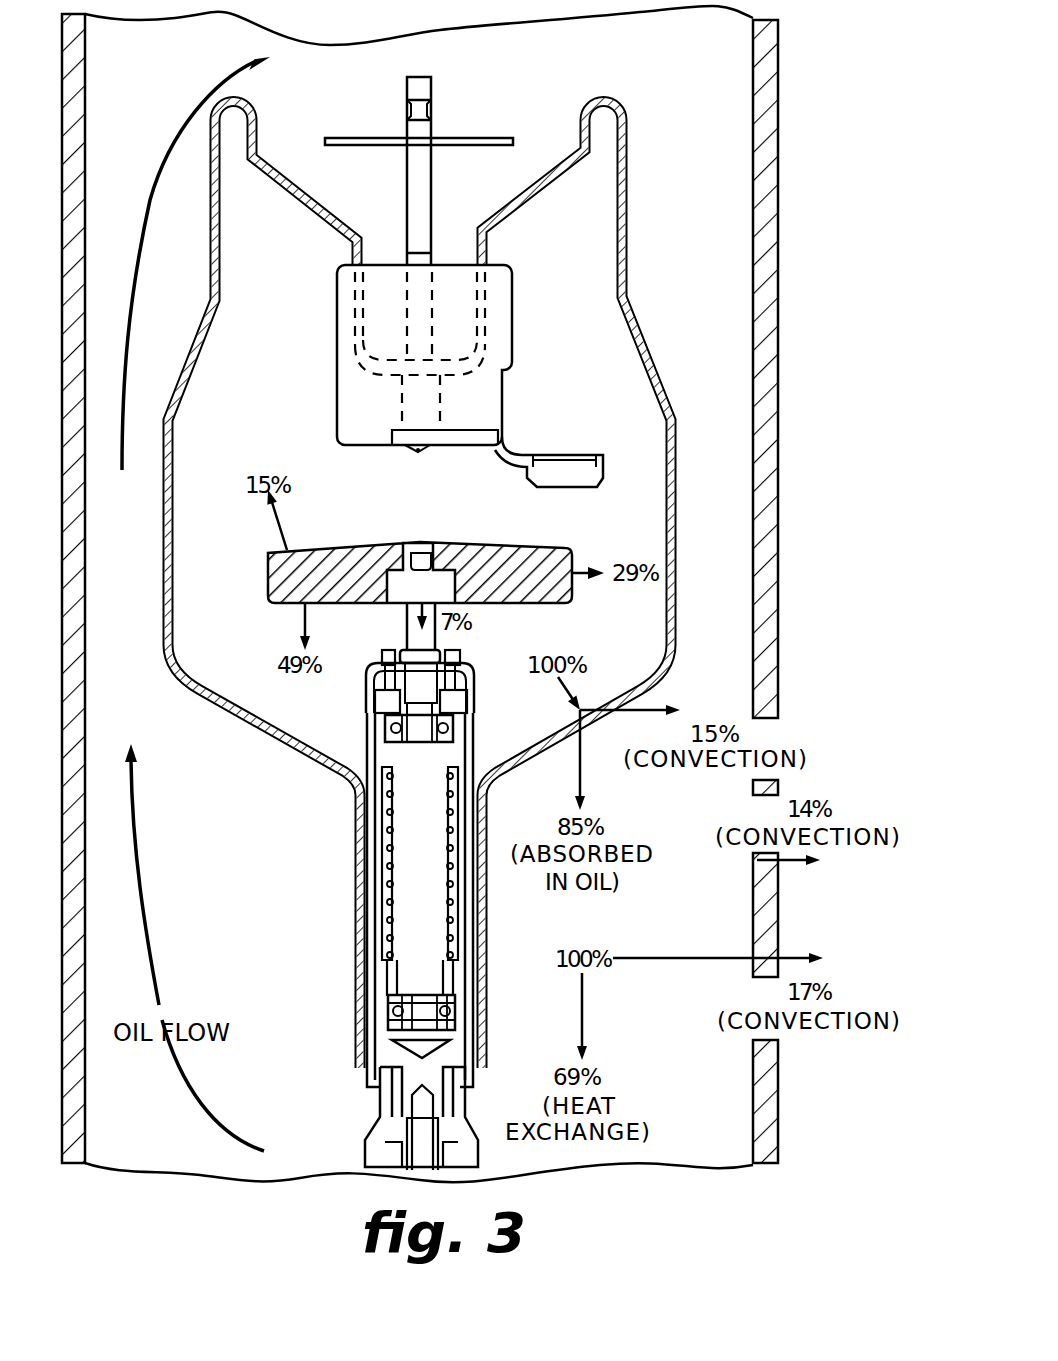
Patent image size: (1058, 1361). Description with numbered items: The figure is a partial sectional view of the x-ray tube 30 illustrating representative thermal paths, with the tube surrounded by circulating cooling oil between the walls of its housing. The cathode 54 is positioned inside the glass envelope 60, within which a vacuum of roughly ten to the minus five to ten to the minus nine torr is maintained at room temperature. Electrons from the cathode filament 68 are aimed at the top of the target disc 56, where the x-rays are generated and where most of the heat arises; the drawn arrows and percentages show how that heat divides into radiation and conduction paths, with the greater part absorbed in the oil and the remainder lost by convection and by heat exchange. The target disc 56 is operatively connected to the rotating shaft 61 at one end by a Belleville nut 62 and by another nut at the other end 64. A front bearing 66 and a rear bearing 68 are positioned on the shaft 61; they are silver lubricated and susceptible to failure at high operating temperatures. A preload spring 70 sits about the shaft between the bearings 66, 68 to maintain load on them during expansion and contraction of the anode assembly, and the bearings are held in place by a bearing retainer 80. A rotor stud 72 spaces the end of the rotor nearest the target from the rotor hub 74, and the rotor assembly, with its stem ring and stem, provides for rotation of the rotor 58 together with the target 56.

The x-ray tube 30 is at (798, 326).
The cathode 54 is at (318, 343).
The target disc 56 is at (362, 553).
The rotor 58 is at (372, 910).
The glass envelope 60 is at (631, 295).
The rotating shaft 61 is at (410, 813).
The Belleville nut 62 is at (433, 643).
The nut at the other end 64 is at (372, 1153).
The front bearing 66 is at (470, 717).
The rear bearing 68 is at (553, 483).
The preload spring 70 is at (383, 873).
The rotor stud 72 is at (410, 613).
The rotor hub 74 is at (493, 657).
The bearing retainer 80 is at (375, 693).